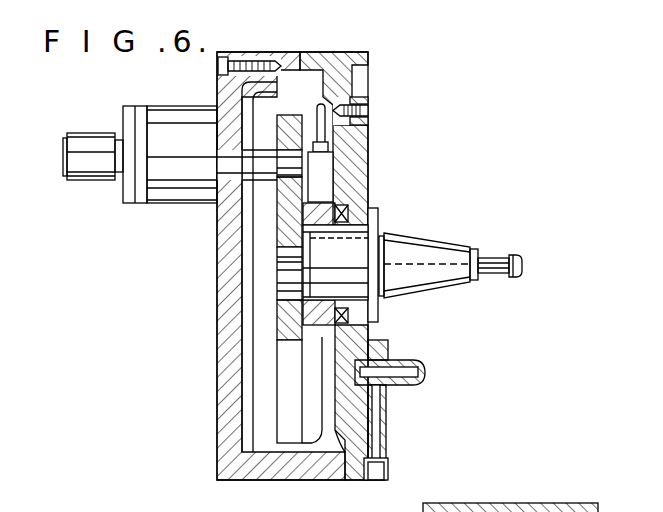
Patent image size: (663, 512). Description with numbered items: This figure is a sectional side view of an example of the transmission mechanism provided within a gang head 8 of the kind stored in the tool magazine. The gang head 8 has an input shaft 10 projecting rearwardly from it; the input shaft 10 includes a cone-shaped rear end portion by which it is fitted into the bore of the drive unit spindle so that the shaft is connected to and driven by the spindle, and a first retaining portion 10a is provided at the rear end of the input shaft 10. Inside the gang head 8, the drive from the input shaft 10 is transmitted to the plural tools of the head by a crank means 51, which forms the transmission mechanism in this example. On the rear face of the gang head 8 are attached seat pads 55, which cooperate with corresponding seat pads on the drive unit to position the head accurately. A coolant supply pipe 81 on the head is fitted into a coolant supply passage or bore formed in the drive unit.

The gang head 8 is at (373, 157).
The input shaft 10 is at (437, 250).
The first retaining portion 10a is at (515, 255).
The crank means 51 is at (285, 210).
The seat pads 55 is at (367, 95).
The coolant supply pipe 81 is at (405, 365).